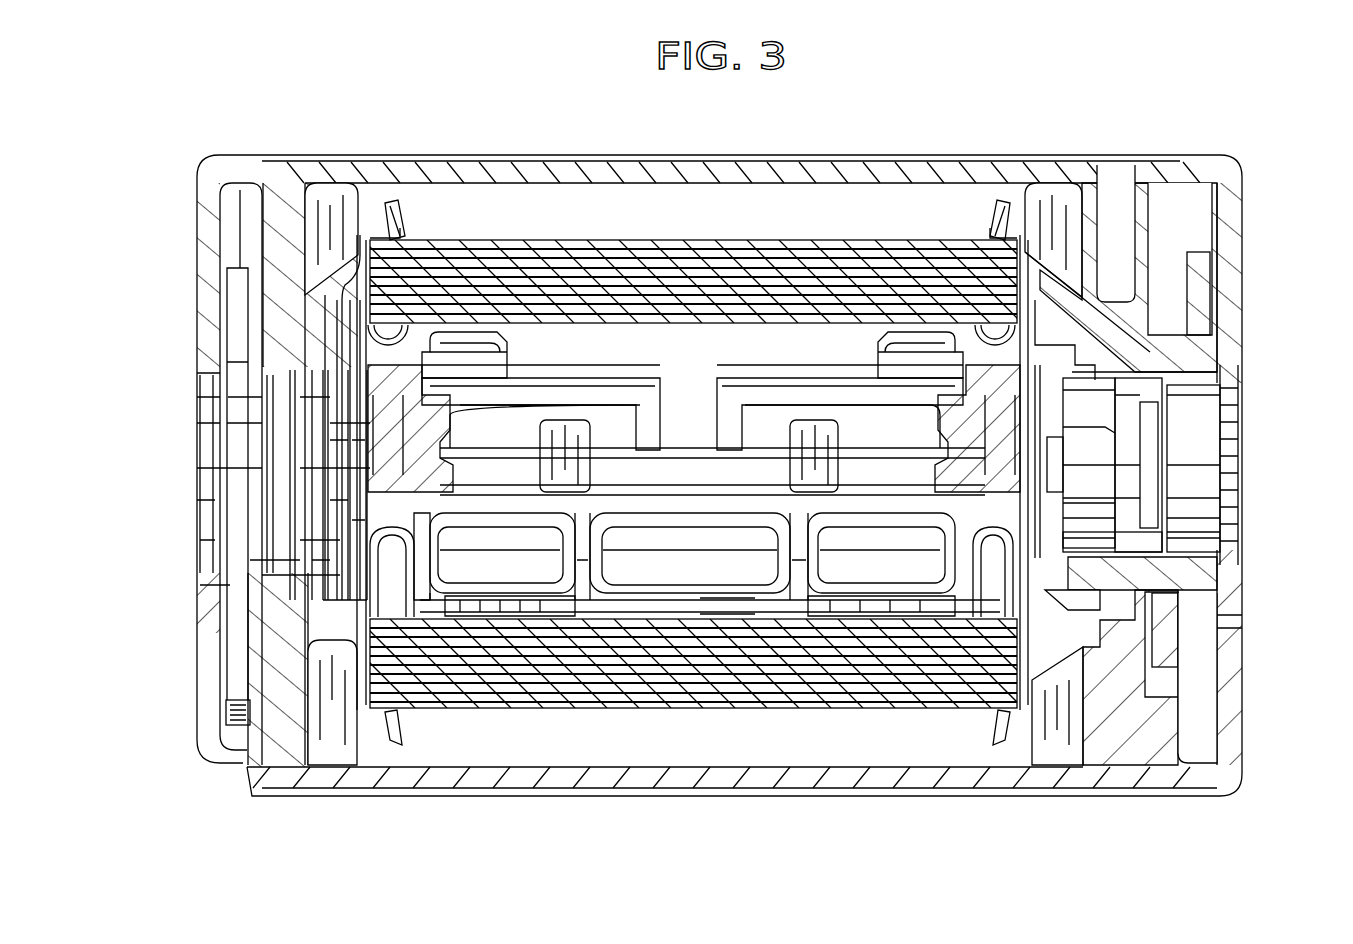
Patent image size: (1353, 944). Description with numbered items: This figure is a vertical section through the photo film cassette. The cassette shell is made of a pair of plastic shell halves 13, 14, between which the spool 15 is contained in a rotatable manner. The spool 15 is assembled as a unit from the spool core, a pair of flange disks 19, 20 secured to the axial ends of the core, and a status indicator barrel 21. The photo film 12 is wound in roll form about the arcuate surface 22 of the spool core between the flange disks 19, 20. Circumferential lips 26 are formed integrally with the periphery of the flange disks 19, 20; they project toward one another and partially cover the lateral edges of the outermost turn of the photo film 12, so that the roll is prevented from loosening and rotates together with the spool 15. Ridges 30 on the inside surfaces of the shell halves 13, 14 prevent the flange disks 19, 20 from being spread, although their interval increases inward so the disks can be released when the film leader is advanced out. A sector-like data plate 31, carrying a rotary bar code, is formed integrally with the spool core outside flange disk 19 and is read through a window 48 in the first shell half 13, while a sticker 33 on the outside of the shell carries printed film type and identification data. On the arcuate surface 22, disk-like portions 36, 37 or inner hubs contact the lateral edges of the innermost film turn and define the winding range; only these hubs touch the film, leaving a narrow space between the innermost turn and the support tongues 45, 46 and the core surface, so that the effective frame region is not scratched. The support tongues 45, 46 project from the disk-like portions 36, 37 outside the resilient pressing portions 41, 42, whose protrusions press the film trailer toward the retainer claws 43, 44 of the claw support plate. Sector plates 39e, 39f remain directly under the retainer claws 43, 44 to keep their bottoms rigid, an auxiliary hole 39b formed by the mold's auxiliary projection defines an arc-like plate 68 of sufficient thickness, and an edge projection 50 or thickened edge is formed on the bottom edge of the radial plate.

The photo film 12 is at (722, 238).
The first shell half 13 is at (912, 152).
The shell half 14 is at (728, 790).
The spool 15 is at (1215, 448).
The flange disk 19 is at (392, 204).
The flange disk 20 is at (1006, 206).
The status indicator barrel 21 is at (1217, 300).
The arcuate surface 22 is at (398, 610).
The circumferential lips 26 is at (400, 230).
The ridges 30 is at (318, 200).
The sector-like data plate 31 is at (230, 715).
The label or sticker 33 is at (365, 183).
The disk-like portion 36 is at (380, 512).
The disk-like portion 37 is at (1025, 512).
The auxiliary hole 39b is at (665, 537).
The sector plate 39e is at (585, 600).
The sector plate 39f is at (797, 600).
The resilient pressing portion 41 is at (640, 385).
The resilient pressing portion 42 is at (750, 390).
The retainer claw 43 is at (540, 440).
The retainer claw 44 is at (825, 445).
The support tongue 45 is at (507, 345).
The support tongue 46 is at (878, 340).
The window 48 is at (207, 632).
The edge projection 50 is at (478, 600).
The arc-like plate 68 is at (727, 600).